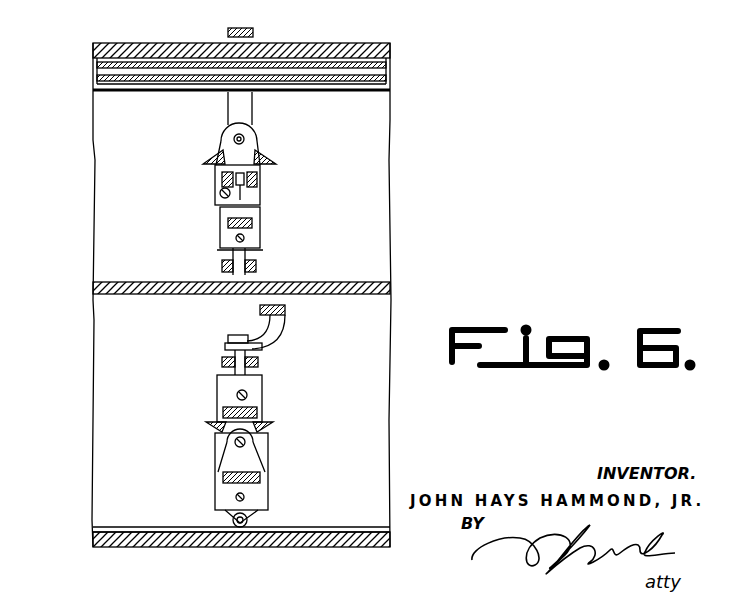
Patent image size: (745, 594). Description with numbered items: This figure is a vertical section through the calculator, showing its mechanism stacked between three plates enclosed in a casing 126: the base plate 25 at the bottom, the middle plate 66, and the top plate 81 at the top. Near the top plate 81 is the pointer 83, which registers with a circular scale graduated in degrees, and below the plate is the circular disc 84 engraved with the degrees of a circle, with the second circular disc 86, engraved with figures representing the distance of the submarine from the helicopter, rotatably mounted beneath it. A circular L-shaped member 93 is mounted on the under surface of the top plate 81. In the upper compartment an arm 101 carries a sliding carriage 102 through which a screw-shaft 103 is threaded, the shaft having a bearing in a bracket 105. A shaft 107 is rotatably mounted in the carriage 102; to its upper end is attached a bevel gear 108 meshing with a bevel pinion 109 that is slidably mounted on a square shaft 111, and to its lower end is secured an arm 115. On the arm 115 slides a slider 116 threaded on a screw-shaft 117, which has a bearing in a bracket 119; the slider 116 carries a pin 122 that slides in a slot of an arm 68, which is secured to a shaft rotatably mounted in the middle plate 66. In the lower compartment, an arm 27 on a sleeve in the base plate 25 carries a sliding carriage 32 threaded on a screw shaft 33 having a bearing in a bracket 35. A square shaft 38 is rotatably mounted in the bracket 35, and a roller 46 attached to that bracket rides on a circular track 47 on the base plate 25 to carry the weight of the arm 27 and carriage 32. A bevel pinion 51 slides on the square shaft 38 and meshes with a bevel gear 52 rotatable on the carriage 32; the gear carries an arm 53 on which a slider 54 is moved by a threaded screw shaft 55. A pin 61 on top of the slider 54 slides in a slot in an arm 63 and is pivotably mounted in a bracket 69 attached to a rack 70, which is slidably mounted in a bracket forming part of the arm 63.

The base plate 25 is at (95, 545).
The arm 27 is at (261, 478).
The carriage 32 is at (218, 462).
The screw shaft 33 is at (236, 497).
The bracket 35 is at (225, 514).
The square shaft 38 is at (236, 442).
The roller 46 is at (249, 521).
The circular track 47 is at (95, 530).
The bevel pinion 51 is at (253, 441).
The bevel gear 52 is at (214, 425).
The arm 53 is at (258, 412).
The slider 54 is at (261, 387).
The screw shaft 55 is at (237, 395).
The pin 61 is at (232, 348).
The arm 63 is at (258, 362).
The middle plate 66 is at (391, 285).
The arm 68 is at (257, 265).
The bracket 69 is at (283, 334).
The rack 70 is at (260, 310).
The top plate 81 is at (392, 51).
The pointer 83 is at (254, 33).
The circular disc 84 is at (97, 65).
The second circular disc 86 is at (391, 80).
The circular L-shaped member 93 is at (93, 95).
The arm 101 is at (258, 180).
The carriage 102 is at (220, 170).
The screw-shaft 103 is at (221, 193).
The bracket 105 is at (230, 105).
The shaft 107 is at (247, 192).
The bevel gear 108 is at (210, 156).
The bevel pinion 109 is at (255, 130).
The square shaft 111 is at (245, 140).
The arm 115 is at (254, 222).
The slider 116 is at (224, 218).
The screw-shaft 117 is at (236, 238).
The bracket 119 is at (260, 251).
The pin 122 is at (224, 272).
The casing 126 is at (92, 312).